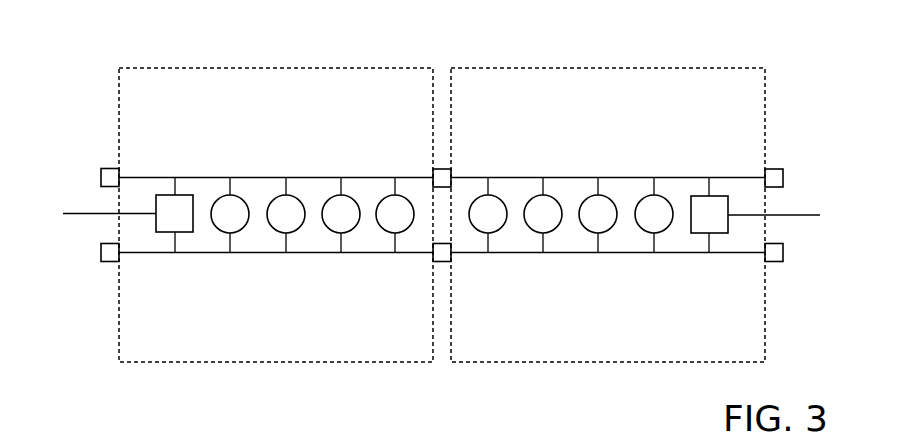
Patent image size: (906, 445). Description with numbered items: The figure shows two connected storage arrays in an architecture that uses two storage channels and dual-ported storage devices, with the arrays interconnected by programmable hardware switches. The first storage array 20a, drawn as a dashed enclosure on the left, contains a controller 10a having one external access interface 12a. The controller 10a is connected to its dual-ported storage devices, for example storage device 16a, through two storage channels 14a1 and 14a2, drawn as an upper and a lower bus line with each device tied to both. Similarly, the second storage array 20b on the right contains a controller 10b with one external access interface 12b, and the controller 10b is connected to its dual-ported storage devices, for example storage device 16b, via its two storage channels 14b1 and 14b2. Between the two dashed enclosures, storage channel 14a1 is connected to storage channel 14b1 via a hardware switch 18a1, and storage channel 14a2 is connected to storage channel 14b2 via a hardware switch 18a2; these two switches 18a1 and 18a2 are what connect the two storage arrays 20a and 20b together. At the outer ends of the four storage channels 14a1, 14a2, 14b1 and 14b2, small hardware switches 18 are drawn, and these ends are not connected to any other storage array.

The controller 10a is at (179, 195).
The controller 10b is at (703, 196).
The external access interface 12a is at (82, 212).
The external access interface 12b is at (803, 212).
The storage channel 14a1 is at (312, 177).
The storage channel 14a2 is at (320, 253).
The storage channel 14b1 is at (572, 177).
The storage channel 14b2 is at (561, 253).
The dual-ported storage device 16a is at (285, 233).
The dual-ported storage device 16b is at (602, 232).
The hardware switch 18 is at (110, 167).
The hardware switch 18a1 is at (441, 169).
The hardware switch 18a2 is at (442, 262).
The storage array 20a is at (118, 324).
The storage array 20b is at (765, 327).